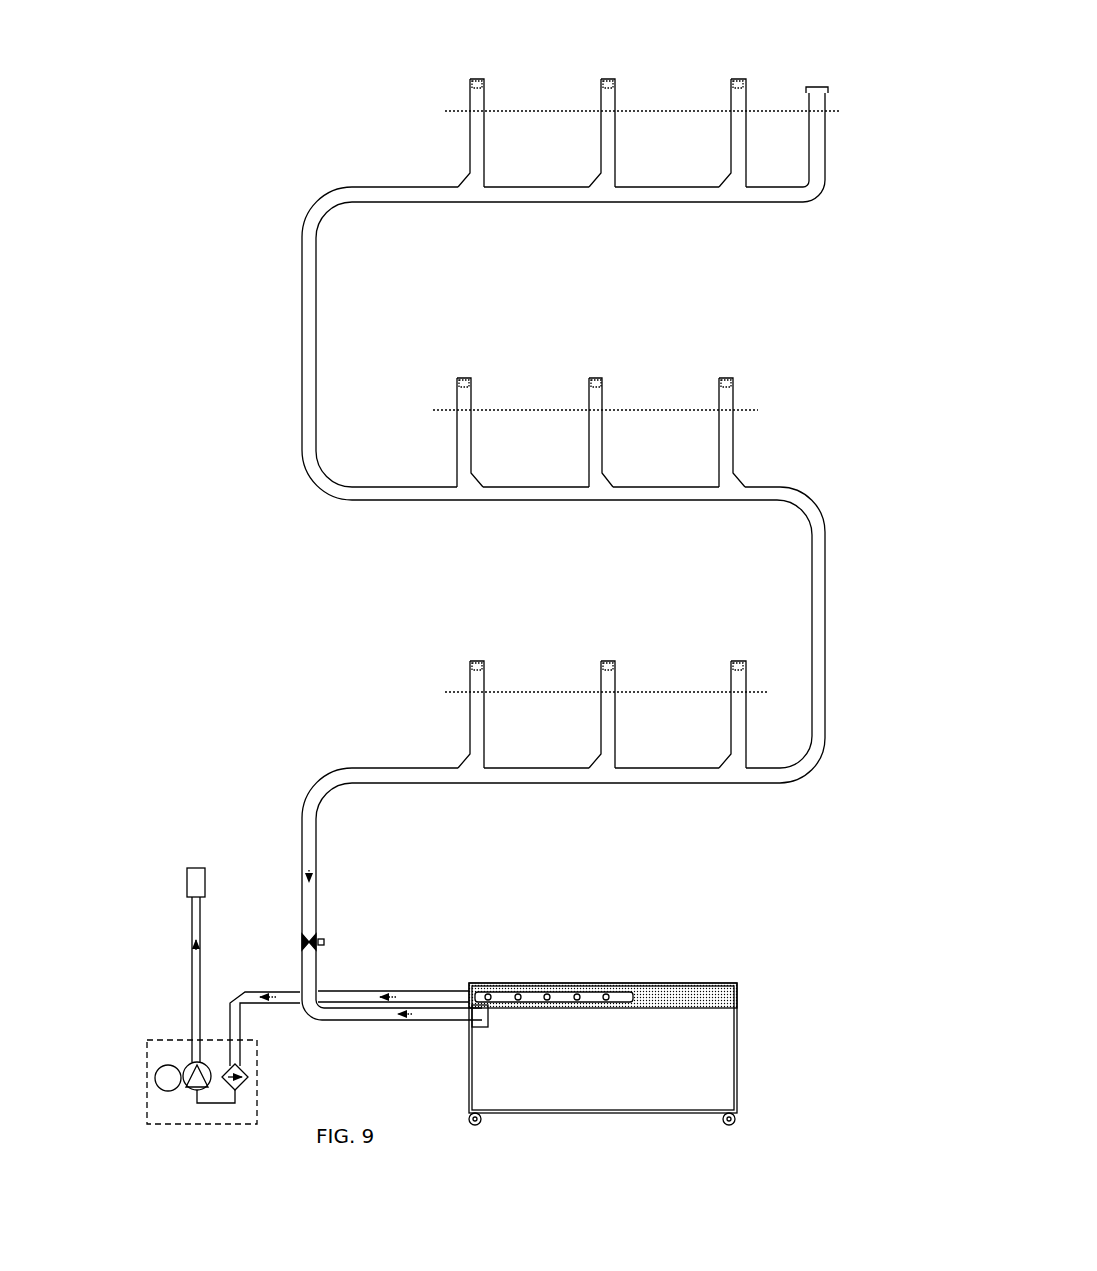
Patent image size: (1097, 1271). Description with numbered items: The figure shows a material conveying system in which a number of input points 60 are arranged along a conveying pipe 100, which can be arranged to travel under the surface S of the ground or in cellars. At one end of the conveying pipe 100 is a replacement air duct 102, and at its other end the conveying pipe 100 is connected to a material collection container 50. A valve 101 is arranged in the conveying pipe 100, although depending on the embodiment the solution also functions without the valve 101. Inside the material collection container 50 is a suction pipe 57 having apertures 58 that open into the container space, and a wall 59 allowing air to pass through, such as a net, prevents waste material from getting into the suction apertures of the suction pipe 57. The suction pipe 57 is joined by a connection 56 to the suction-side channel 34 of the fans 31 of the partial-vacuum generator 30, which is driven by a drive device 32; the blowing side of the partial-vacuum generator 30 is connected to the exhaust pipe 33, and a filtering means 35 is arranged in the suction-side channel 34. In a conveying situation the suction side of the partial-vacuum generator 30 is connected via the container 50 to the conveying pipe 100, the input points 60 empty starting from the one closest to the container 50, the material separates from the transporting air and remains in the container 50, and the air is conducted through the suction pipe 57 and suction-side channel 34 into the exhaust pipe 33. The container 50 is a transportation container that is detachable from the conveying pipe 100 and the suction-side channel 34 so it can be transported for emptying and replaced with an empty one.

The conveying pipe 100 is at (333, 767).
The valve 101 is at (312, 935).
The replacement air duct 102 is at (817, 146).
The input point 60 is at (476, 78).
The surface of the ground S is at (560, 111).
The partial-vacuum generator 30 is at (141, 1038).
The fan 31 is at (188, 1064).
The drive device 32 is at (163, 1066).
The exhaust pipe 33 is at (204, 945).
The suction-side channel 34 is at (243, 992).
The filtering means 35 is at (242, 1079).
The material collection container 50 is at (576, 1004).
The connection 56 is at (466, 988).
The suction pipe 57 is at (547, 995).
The aperture 58 is at (518, 995).
The wall allowing air to pass through 59 is at (635, 996).